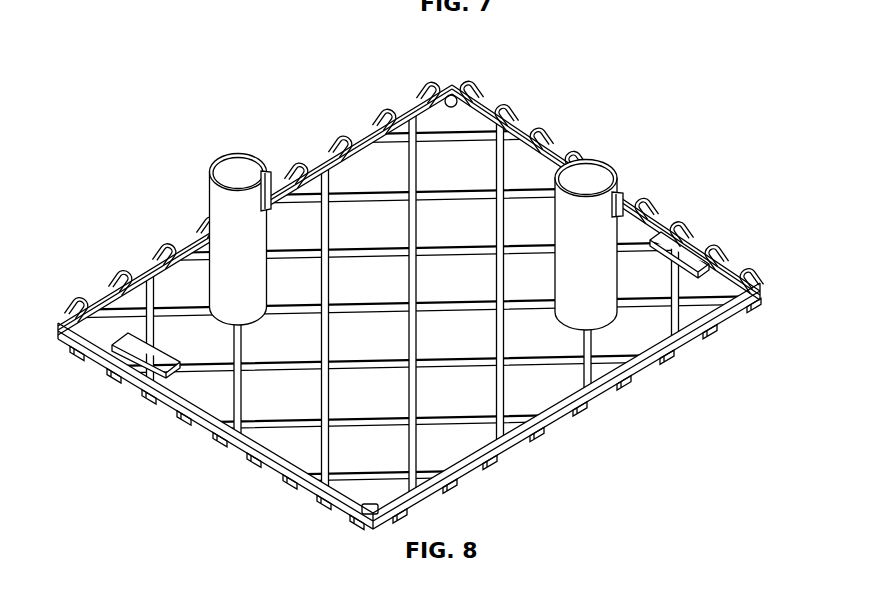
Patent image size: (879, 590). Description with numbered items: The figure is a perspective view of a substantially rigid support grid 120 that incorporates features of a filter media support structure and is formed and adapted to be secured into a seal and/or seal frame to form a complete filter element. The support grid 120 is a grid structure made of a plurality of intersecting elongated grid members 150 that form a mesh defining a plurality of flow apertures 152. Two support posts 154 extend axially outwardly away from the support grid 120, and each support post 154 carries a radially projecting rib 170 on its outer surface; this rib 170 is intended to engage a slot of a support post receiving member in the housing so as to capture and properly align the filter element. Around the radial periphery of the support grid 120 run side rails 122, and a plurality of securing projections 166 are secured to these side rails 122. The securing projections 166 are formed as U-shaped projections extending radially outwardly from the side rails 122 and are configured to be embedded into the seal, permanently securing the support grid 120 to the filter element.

The support grid 120 is at (624, 97).
The side rails 122 is at (402, 117).
The elongated grid members 150 is at (498, 163).
The flow apertures 152 is at (386, 291).
The support posts 154 is at (227, 205).
The securing projections 166 is at (165, 256).
The radially projecting rib 170 is at (263, 177).